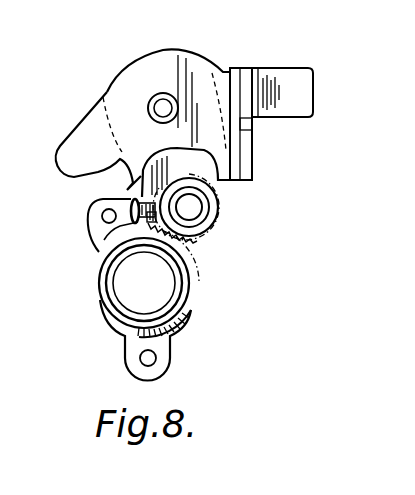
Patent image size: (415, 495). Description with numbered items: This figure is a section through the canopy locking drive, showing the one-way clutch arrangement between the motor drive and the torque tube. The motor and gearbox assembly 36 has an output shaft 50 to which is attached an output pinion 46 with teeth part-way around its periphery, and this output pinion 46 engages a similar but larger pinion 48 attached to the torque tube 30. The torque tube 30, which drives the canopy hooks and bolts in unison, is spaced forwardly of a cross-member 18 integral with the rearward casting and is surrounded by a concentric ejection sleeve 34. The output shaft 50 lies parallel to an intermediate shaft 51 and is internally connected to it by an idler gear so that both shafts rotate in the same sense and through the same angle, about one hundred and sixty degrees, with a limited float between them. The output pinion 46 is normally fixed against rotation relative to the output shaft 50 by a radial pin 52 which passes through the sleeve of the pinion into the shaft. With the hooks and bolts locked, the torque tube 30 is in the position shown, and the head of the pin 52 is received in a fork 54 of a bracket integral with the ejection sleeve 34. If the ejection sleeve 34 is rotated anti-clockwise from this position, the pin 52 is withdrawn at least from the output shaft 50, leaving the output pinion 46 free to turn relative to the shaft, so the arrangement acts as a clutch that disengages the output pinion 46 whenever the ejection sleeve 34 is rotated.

The cross-member 18 is at (258, 92).
The torque tube 30 is at (173, 288).
The ejection sleeve 34 is at (98, 284).
The motor and gearbox assembly 36 is at (137, 56).
The output pinion 46 is at (222, 203).
The pinion 48 is at (199, 282).
The output shaft 50 is at (190, 207).
The intermediate shaft 51 is at (154, 106).
The radial pin 52 is at (128, 203).
The fork 54 is at (98, 238).